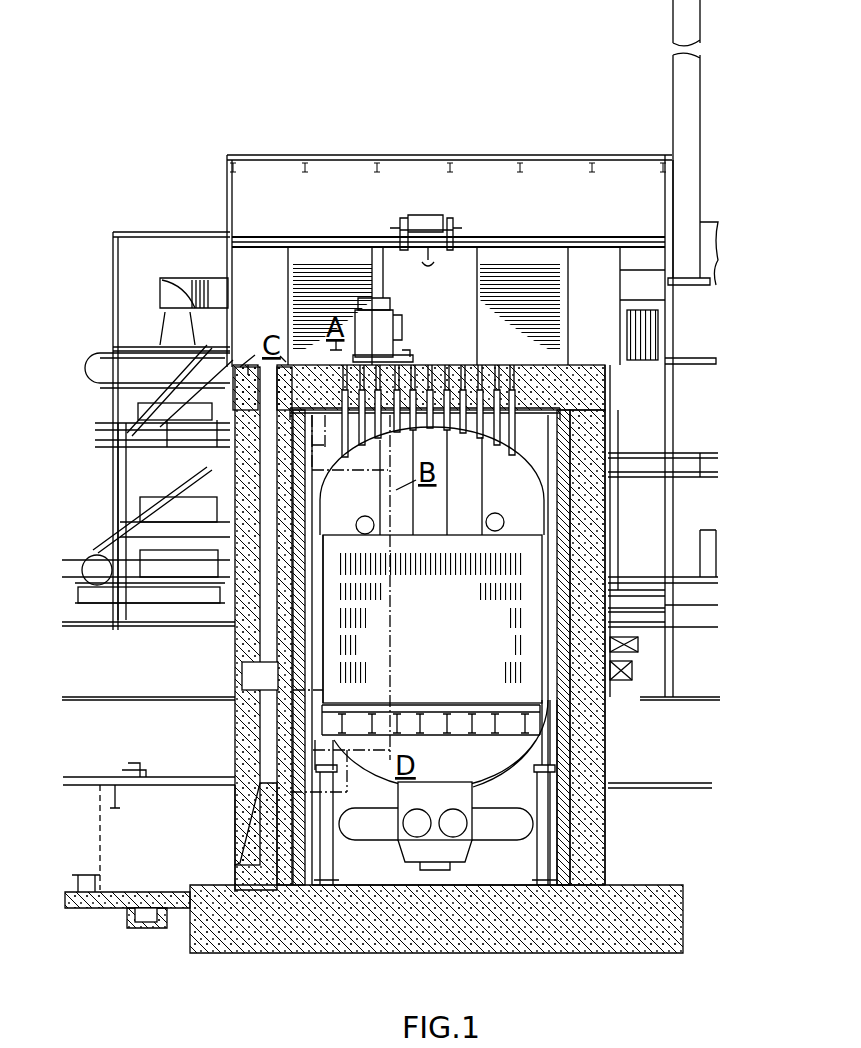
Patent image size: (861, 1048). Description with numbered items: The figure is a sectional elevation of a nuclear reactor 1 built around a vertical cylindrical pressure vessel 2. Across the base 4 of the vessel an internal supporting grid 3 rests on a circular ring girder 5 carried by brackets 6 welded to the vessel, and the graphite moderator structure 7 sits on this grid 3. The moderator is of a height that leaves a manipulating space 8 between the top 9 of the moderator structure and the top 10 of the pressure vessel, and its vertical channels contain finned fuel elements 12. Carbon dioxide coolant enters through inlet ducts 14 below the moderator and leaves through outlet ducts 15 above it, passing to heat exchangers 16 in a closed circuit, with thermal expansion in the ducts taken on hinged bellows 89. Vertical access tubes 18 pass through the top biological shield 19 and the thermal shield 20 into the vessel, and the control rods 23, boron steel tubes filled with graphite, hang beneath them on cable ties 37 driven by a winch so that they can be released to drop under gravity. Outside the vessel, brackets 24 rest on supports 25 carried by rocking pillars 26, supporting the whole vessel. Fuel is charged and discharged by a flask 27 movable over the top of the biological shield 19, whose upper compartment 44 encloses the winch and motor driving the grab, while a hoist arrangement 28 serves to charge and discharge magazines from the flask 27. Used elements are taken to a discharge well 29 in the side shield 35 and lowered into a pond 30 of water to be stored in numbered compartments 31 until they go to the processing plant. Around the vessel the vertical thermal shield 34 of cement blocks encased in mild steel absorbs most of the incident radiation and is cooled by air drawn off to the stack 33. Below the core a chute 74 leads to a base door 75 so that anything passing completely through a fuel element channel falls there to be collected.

The nuclear reactor 1 is at (442, 645).
The pressure vessel 2 is at (328, 592).
The internal supporting grid 3 is at (440, 727).
The base 4 is at (376, 773).
The circular ring girder 5 is at (431, 705).
The brackets 6 is at (528, 725).
The graphite moderator structure 7 is at (548, 592).
The manipulating space 8 is at (462, 472).
The top of the moderator structure 9 is at (511, 520).
The top of the pressure vessel 10 is at (596, 420).
The fuel elements 12 is at (506, 667).
The inlet ducts 14 is at (468, 835).
The outlet ducts 15 is at (170, 328).
The heat exchangers 16 is at (250, 342).
The vertical access tubes 18 is at (455, 372).
The top biological shield 19 is at (596, 383).
The thermal shield 20 is at (498, 955).
The control rods 23 is at (470, 485).
The brackets 24 is at (548, 752).
The supports 25 is at (526, 749).
The rocking pillars 26 is at (546, 845).
The flask 27 is at (390, 342).
The hoist arrangement 28 is at (430, 220).
The discharge well 29 is at (262, 647).
The pond 30 is at (216, 848).
The numbered compartments 31 is at (95, 888).
The stack 33 is at (676, 98).
The vertical thermal shield 34 is at (548, 470).
The side shield 35 is at (552, 490).
The cable ties 37 is at (448, 482).
The upper compartment 44 is at (386, 306).
The chute 74 is at (400, 852).
The base door 75 is at (432, 870).
The hinged bellows 89 is at (198, 280).